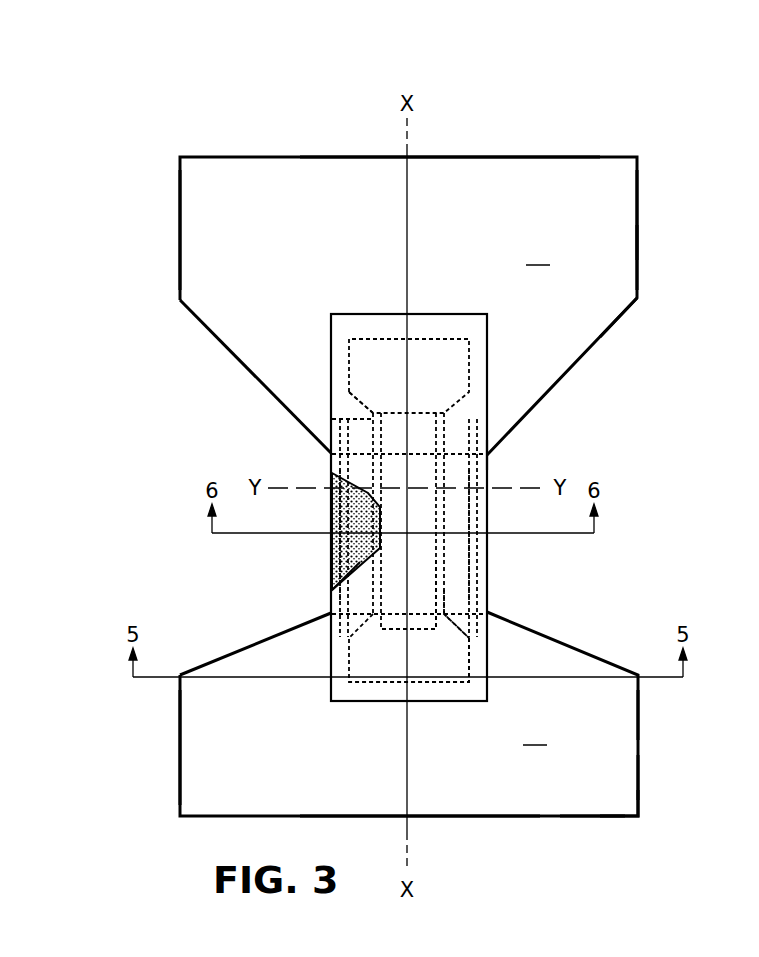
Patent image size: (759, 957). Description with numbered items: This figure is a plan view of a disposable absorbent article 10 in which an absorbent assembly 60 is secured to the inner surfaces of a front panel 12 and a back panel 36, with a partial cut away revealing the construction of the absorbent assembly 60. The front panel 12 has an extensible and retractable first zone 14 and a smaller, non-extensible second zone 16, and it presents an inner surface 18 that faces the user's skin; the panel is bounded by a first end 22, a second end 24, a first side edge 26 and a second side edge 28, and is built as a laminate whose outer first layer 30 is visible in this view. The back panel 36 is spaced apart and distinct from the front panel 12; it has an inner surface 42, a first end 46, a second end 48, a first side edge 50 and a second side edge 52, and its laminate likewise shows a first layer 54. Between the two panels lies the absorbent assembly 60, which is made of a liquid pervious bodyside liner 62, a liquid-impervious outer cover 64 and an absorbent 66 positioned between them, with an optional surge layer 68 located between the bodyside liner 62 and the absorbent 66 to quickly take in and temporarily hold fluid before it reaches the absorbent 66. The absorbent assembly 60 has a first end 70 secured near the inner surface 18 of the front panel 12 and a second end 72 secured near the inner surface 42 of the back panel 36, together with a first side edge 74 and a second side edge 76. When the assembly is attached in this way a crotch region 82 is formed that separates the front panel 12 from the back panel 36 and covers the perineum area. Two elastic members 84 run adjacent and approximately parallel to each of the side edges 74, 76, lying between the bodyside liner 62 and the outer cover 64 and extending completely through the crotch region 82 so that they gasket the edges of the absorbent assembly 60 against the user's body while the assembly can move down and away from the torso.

The disposable absorbent article 10 is at (612, 140).
The front panel 12 is at (612, 753).
The first zone 14 is at (618, 720).
The second zone 16 is at (487, 648).
The inner surface 18 is at (408, 723).
The first end 22 is at (552, 816).
The second end 24 is at (488, 597).
The first side edge 26 is at (180, 745).
The second side edge 28 is at (638, 770).
The first layer 30 is at (628, 797).
The back panel 36 is at (618, 210).
The inner surface 42 is at (408, 218).
The first end 46 is at (487, 157).
The second end 48 is at (488, 462).
The first side edge 50 is at (180, 238).
The second side edge 52 is at (637, 243).
The first layer 54 is at (623, 281).
The absorbent assembly 60 is at (496, 546).
The bodyside liner 62 is at (336, 404).
The outer cover 64 is at (332, 568).
The absorbent 66 is at (332, 547).
The surge layer 68 is at (397, 420).
The first end 70 is at (441, 702).
The second end 72 is at (440, 314).
The first side edge 74 is at (332, 602).
The second side edge 76 is at (490, 603).
The crotch region 82 is at (625, 453).
The elastic member 84 is at (343, 521).